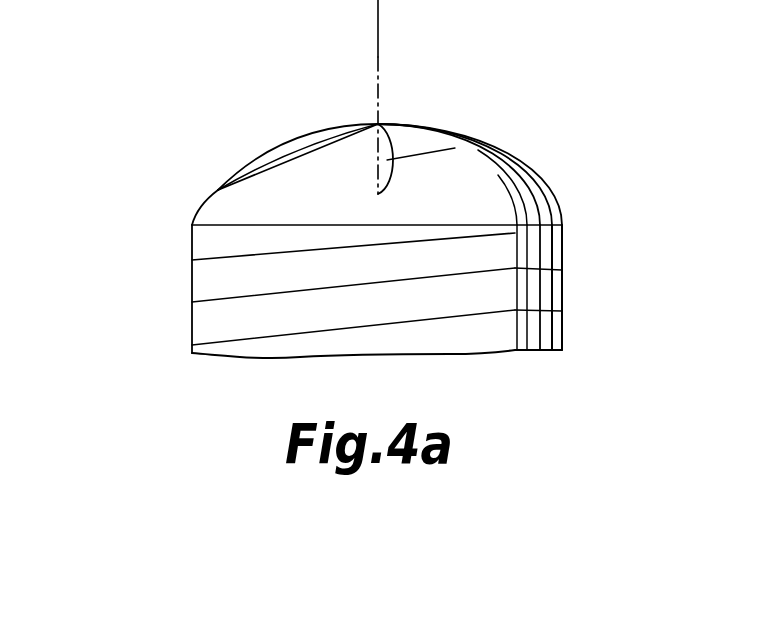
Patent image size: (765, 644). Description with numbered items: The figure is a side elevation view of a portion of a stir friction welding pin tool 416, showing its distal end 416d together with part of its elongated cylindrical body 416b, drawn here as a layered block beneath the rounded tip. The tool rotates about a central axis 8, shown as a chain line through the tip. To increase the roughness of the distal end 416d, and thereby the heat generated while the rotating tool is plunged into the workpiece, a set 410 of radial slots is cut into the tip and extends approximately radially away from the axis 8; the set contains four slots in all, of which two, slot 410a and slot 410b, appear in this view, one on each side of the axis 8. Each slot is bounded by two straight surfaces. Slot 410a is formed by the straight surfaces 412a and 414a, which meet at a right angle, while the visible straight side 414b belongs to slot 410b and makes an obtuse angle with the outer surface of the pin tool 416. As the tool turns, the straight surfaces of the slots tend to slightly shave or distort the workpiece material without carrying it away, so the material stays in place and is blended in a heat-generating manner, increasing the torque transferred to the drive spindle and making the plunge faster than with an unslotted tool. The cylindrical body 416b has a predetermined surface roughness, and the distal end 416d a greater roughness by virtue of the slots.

The axis 8 is at (378, 23).
The set of radial slots 410 is at (314, 84).
The radial slot 410a is at (292, 142).
The radial slot 410b is at (394, 136).
The straight surface 412a is at (262, 167).
The straight surface 414a is at (320, 148).
The straight side 414b is at (437, 143).
The pin tool 416 is at (192, 303).
The cylindrical body 416b is at (574, 225).
The distal end 416d is at (152, 119).